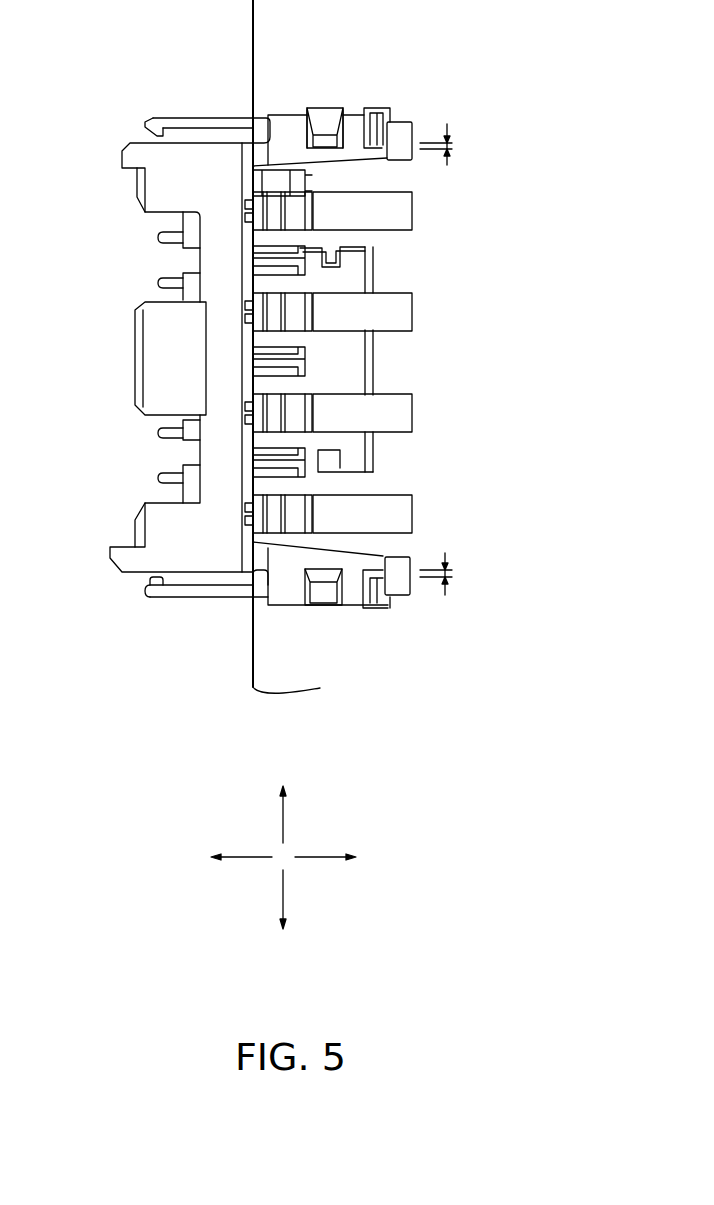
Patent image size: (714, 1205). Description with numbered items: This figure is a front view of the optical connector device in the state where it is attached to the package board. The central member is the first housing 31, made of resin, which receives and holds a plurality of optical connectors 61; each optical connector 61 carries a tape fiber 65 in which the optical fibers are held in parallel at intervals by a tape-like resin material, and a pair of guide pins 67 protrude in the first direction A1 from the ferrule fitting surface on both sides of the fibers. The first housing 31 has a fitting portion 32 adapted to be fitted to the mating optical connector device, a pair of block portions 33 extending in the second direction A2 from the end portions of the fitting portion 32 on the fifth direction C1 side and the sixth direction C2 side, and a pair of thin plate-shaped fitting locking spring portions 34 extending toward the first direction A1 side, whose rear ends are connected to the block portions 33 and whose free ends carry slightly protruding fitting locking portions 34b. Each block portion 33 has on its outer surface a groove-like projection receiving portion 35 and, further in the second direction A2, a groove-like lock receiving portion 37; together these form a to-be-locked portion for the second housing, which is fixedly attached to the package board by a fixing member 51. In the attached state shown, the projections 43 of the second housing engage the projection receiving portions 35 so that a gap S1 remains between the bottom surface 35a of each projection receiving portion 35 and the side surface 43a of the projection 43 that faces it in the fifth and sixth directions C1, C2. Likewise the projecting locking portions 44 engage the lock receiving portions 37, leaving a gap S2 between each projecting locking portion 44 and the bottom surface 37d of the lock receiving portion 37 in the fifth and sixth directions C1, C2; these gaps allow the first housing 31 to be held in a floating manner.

The first housing 31 is at (120, 147).
The fitting portion 32 is at (133, 382).
The block portion 33 is at (402, 162).
The fitting locking spring portion 34 is at (198, 117).
The fitting locking portion 34b is at (155, 115).
The projection receiving portion 35 is at (308, 152).
The bottom surface 35a is at (340, 112).
The lock receiving portion 37 is at (387, 553).
The bottom surface 37d is at (388, 124).
The projection 43 is at (328, 120).
The side surface 43a is at (304, 156).
The projecting locking portion 44 is at (380, 143).
The fixing member 51 is at (365, 266).
The optical connector 61 is at (312, 176).
The tape fiber 65 is at (400, 207).
The guide pin 67 is at (158, 238).
The gap S1 is at (475, 144).
The gap S2 is at (474, 574).
The fifth direction C1 is at (282, 820).
The sixth direction C2 is at (285, 903).
The first direction A1 is at (245, 857).
The second direction A2 is at (323, 855).